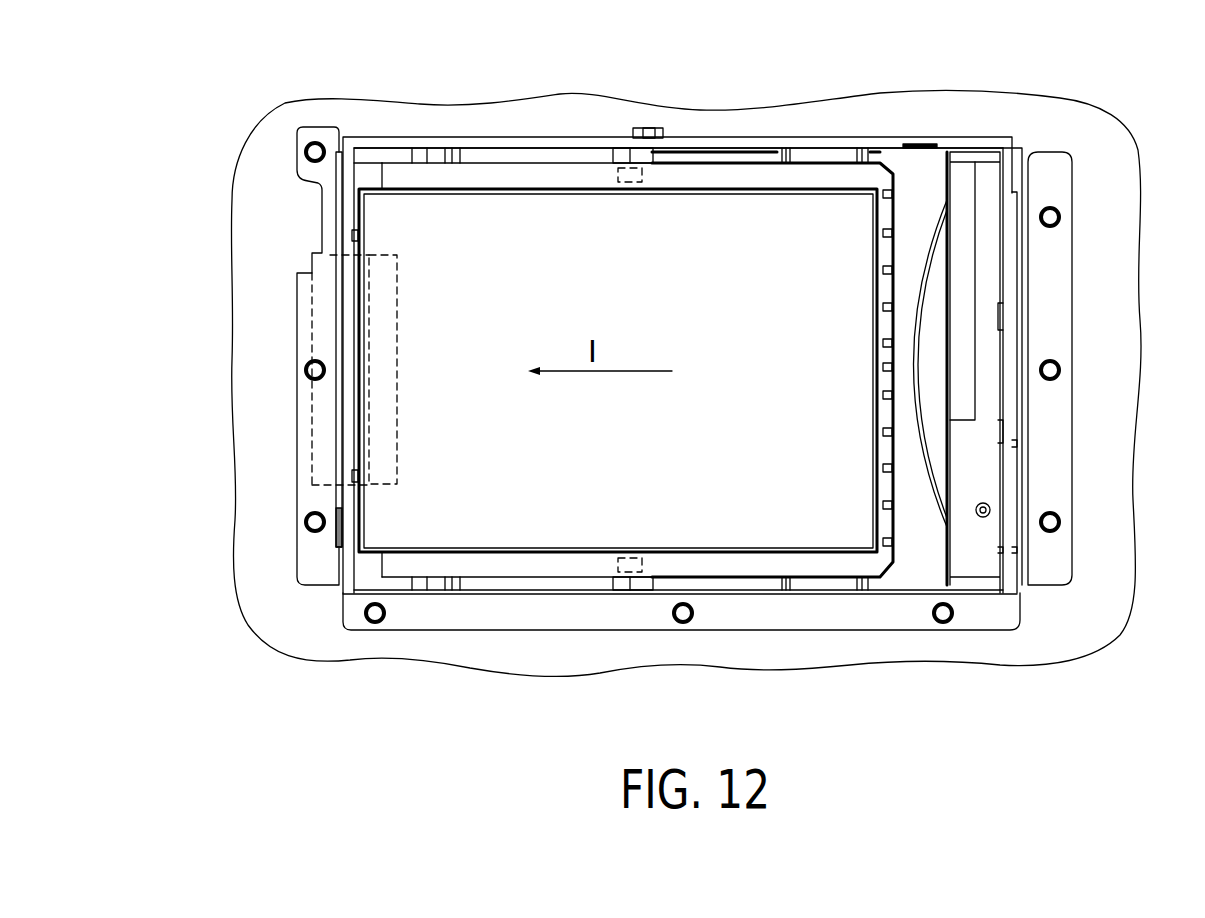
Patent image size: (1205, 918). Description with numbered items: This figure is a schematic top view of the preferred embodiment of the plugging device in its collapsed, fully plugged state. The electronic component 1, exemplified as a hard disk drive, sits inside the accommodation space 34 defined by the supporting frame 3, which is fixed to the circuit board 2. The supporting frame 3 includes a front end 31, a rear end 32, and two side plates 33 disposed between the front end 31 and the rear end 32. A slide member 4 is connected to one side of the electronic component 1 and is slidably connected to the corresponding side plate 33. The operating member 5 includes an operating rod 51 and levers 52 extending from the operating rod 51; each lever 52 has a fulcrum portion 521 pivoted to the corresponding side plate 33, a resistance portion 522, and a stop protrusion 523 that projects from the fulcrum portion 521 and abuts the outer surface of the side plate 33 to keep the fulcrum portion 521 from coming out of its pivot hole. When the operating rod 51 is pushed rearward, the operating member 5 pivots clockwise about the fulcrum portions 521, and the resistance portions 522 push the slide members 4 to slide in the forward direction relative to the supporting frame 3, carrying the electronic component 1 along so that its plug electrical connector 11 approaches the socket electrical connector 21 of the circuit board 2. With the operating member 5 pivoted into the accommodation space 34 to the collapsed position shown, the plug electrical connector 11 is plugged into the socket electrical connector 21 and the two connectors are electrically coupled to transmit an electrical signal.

The electronic component 1 is at (829, 533).
The circuit board 2 is at (916, 106).
The supporting frame 3 is at (1075, 404).
The slide member 4 is at (827, 138).
The operating member 5 is at (959, 189).
The plug electrical connector 11 is at (378, 262).
The socket electrical connector 21 is at (365, 252).
The front end 31 is at (296, 470).
The rear end 32 is at (1073, 462).
The side plate 33 is at (544, 131).
The accommodation space 34 is at (968, 262).
The operating rod 51 is at (913, 345).
The lever 52 is at (803, 594).
The fulcrum portion 521 is at (660, 133).
The resistance portion 522 is at (618, 176).
The stop protrusion 523 is at (650, 128).